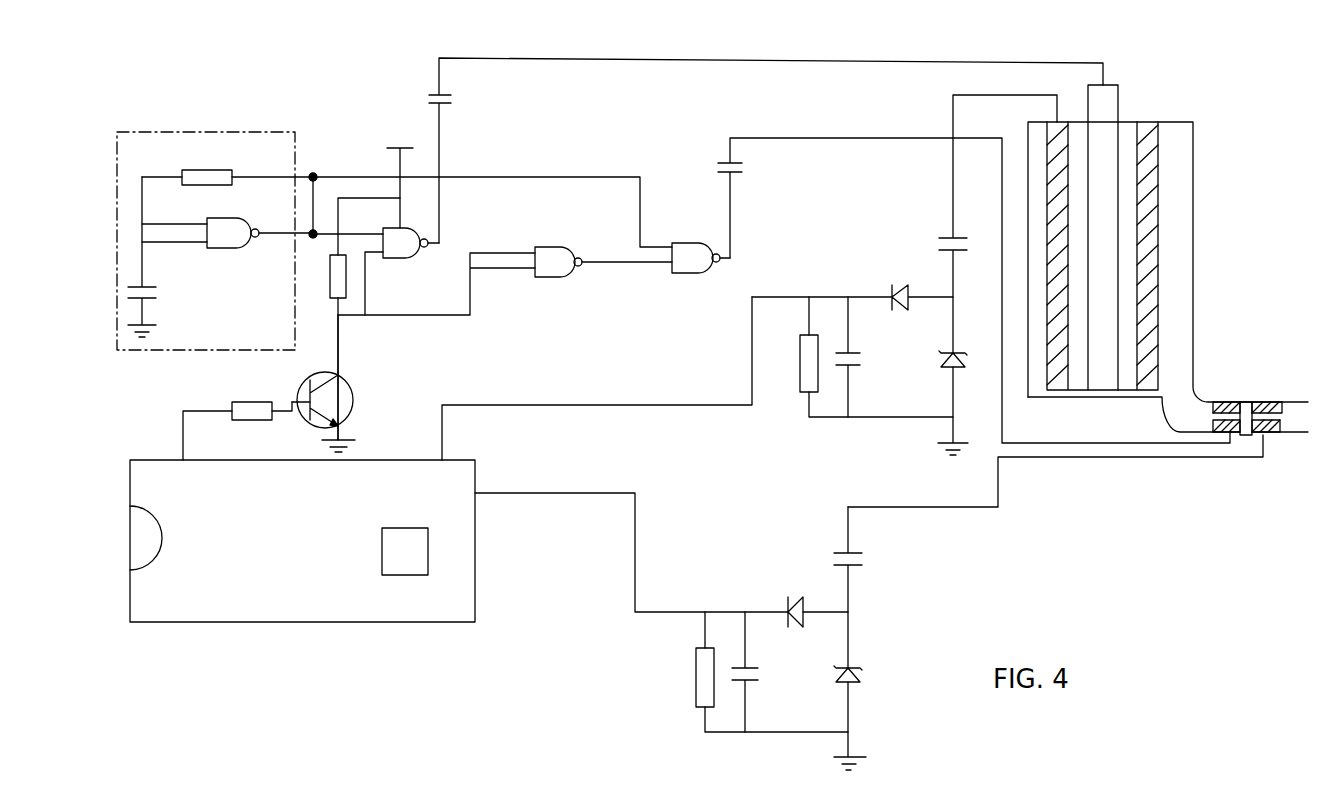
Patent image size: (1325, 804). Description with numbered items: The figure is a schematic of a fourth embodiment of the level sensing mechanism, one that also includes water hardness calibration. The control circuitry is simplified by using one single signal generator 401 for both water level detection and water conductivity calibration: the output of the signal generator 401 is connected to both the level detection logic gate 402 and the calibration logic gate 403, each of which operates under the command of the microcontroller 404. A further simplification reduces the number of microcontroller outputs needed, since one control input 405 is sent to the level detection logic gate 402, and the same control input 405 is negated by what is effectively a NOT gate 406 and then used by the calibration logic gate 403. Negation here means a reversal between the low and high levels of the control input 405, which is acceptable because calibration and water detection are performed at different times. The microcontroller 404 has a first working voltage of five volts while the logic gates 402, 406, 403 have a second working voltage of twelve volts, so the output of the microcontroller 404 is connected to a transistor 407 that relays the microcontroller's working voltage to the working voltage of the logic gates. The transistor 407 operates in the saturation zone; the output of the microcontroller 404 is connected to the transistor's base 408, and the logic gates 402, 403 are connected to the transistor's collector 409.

The signal generator 401 is at (198, 120).
The level detection logic gate 402 is at (407, 259).
The calibration logic gate 403 is at (687, 274).
The microcontroller 404 is at (220, 623).
The control input 405 is at (367, 316).
The NOT gate 406 is at (557, 278).
The transistor 407 is at (353, 401).
The transistor base 408 is at (292, 420).
The transistor collector 409 is at (340, 317).